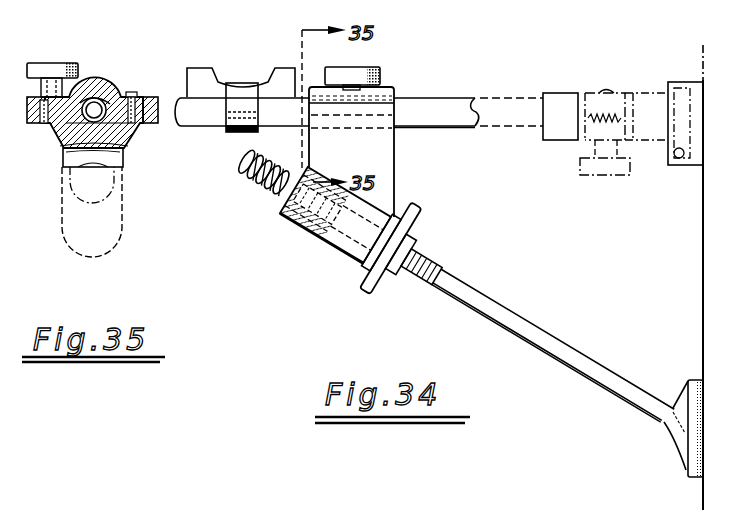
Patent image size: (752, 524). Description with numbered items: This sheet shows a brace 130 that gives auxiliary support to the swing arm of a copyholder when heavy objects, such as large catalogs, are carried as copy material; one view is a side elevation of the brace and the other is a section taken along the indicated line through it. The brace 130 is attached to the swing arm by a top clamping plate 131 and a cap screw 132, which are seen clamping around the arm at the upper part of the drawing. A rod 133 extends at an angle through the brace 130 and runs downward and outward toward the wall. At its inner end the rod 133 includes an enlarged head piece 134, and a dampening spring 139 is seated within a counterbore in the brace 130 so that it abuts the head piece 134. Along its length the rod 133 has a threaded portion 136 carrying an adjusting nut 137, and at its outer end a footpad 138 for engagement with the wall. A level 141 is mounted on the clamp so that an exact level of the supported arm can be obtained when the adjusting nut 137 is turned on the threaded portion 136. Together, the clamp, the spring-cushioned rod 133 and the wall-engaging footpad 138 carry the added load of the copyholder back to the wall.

In FIG. 34, the brace 130 is at (331, 246).
In FIG. 35, the top clamping plate 131 is at (85, 81).
In FIG. 35, the cap screw 132 is at (60, 67).
In FIG. 34, the cap screw 132 is at (366, 68).
In FIG. 34, the rod 133 is at (592, 372).
In FIG. 34, the enlarged head piece 134 is at (258, 160).
In FIG. 34, the threaded portion 136 is at (423, 283).
In FIG. 34, the adjusting nut 137 is at (381, 288).
In FIG. 34, the footpad 138 is at (684, 453).
In FIG. 34, the dampening spring 139 is at (277, 196).
In FIG. 34, the level 141 is at (194, 77).